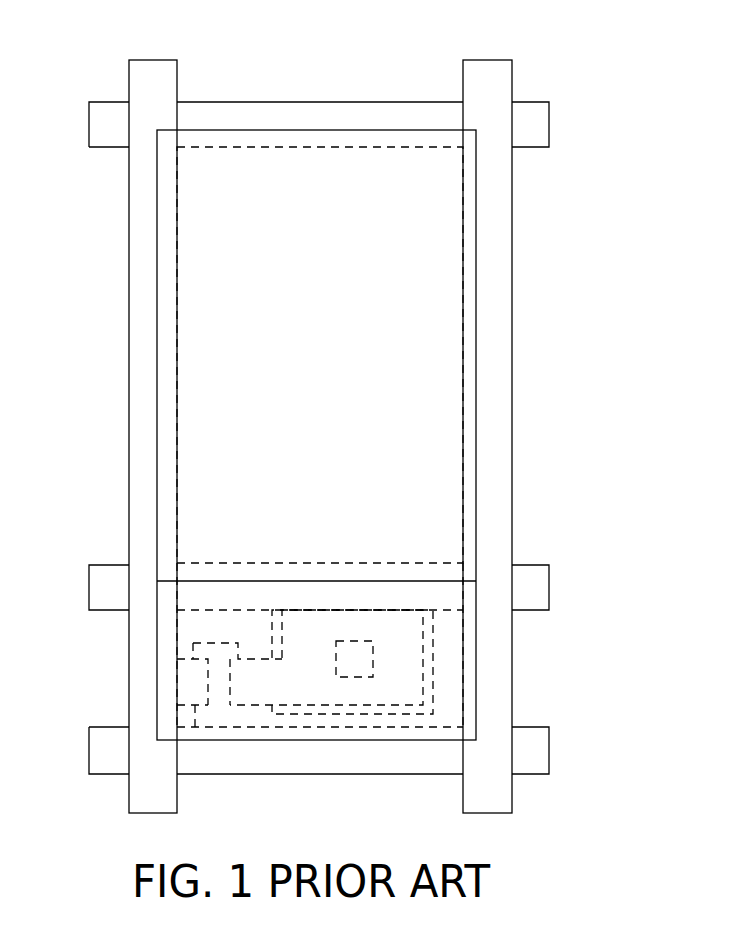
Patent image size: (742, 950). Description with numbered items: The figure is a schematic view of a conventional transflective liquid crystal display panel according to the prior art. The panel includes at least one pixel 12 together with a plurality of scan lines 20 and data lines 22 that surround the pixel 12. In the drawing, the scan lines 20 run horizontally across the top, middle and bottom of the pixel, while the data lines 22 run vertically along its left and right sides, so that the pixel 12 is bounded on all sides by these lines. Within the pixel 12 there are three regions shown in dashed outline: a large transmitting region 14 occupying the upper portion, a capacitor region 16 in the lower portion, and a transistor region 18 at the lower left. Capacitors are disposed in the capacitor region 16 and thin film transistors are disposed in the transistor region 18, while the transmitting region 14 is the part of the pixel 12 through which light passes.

The pixel 12 is at (660, 160).
The transmitting region 14 is at (433, 368).
The capacitor region 16 is at (405, 673).
The transistor region 18 is at (216, 710).
The scan lines 20 is at (97, 122).
The data lines 22 is at (492, 448).